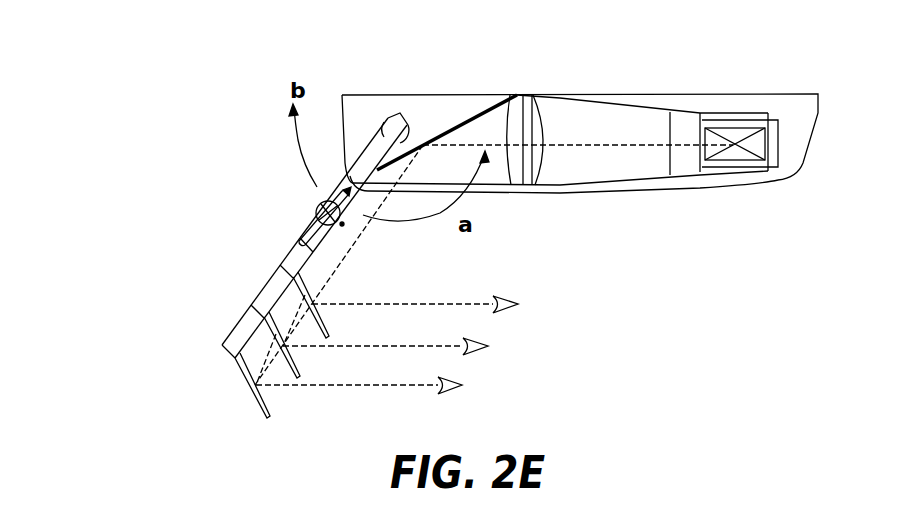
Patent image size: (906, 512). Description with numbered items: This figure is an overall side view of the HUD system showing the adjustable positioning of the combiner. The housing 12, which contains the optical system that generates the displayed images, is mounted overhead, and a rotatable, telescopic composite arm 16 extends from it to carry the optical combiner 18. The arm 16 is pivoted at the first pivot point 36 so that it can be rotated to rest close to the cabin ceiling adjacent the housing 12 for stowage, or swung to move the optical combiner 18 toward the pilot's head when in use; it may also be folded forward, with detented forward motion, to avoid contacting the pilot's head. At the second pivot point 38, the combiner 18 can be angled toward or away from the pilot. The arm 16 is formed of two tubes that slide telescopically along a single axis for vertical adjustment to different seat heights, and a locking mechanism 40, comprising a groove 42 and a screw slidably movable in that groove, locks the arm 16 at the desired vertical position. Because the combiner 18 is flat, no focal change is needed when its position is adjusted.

The housing 12 is at (720, 95).
The retractable arm 16 is at (303, 236).
The optical combiner 18 is at (256, 336).
The first pivot point 36 is at (395, 116).
The second pivot point 38 is at (338, 234).
The locking mechanism 40 is at (320, 203).
The groove 42 is at (300, 233).